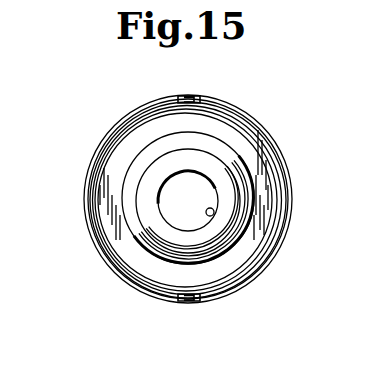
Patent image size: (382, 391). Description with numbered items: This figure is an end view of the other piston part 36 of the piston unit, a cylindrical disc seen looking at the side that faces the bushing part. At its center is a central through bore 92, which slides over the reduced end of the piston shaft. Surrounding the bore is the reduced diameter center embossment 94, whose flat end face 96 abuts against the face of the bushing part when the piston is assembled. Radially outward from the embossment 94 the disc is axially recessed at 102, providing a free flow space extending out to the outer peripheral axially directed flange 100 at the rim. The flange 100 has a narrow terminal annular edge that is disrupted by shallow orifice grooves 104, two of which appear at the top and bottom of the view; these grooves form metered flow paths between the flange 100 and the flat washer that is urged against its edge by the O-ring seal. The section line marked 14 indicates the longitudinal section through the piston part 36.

The section line 14 is at (168, 79).
The other piston part 36 is at (74, 238).
The central through bore 92 is at (213, 214).
The reduced diameter center embossment 94 is at (148, 155).
The flat end face 96 is at (233, 197).
The outer peripheral axially directed flange 100 is at (269, 139).
The axial recess 102 is at (263, 167).
The shallow orifice grooves 104 is at (196, 99).